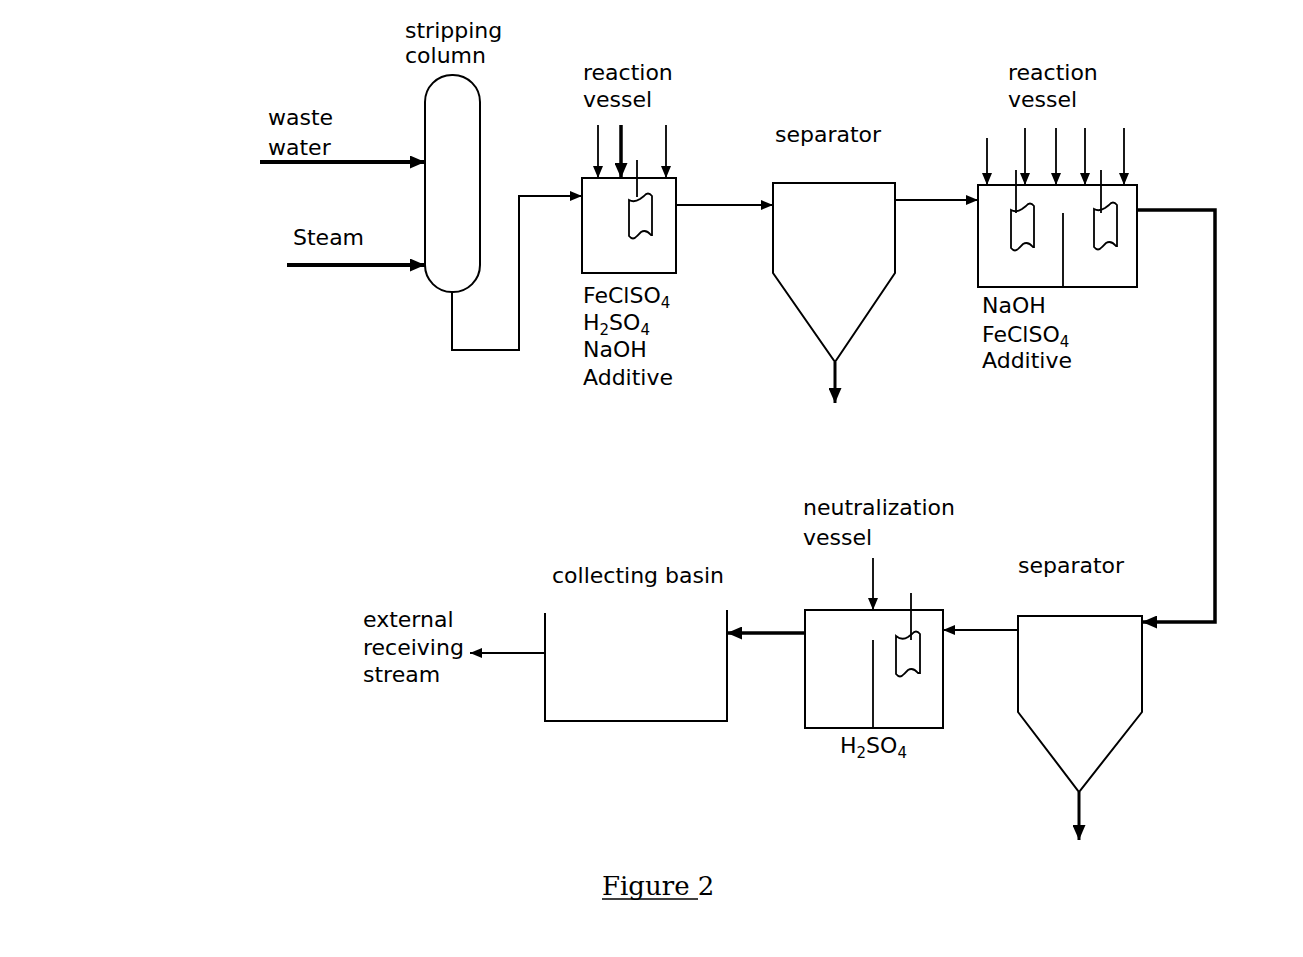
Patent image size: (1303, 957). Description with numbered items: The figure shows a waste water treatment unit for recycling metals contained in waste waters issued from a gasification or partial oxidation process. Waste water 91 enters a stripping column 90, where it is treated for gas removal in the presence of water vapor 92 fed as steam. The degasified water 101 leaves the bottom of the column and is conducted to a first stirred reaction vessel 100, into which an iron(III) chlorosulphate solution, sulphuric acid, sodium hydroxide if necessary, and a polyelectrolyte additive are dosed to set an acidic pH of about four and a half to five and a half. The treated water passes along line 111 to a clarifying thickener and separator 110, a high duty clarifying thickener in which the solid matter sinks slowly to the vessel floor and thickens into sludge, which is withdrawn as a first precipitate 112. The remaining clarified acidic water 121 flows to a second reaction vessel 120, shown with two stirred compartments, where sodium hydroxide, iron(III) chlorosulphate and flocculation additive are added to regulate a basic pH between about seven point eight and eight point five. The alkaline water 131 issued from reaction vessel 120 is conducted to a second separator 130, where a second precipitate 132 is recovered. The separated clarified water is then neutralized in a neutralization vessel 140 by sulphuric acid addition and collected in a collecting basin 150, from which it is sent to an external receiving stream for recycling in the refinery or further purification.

The stripping column 90 is at (467, 183).
The waste water 91 is at (342, 149).
The water vapor 92 is at (356, 285).
The first stirred reaction vessel 100 is at (643, 265).
The degasified water 101 is at (517, 287).
The clarifying thickener and separator 110 is at (858, 252).
The line from reaction vessel to separator 111 is at (724, 189).
The first precipitate 112 is at (869, 382).
The reaction vessel 120 is at (1140, 195).
The acidic water 121 is at (936, 188).
The second separator 130 is at (1098, 684).
The alkaline water 131 is at (1201, 416).
The second precipitate 132 is at (1111, 824).
The neutralization vessel 140 is at (822, 728).
The collecting basin 150 is at (652, 658).